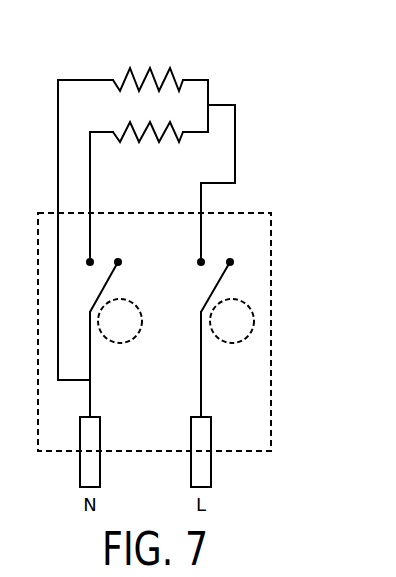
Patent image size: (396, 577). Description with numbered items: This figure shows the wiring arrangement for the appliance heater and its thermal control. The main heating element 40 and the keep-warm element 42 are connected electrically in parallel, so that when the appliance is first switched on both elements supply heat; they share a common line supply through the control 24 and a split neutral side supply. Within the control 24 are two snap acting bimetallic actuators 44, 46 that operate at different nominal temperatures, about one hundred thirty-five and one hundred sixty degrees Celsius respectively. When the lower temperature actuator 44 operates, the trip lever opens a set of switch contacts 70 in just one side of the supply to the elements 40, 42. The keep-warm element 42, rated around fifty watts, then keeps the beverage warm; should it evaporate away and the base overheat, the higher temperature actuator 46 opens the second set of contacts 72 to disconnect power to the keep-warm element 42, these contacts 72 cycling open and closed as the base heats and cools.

The control 24 is at (280, 346).
The main heating element 40 is at (158, 143).
The keep-warm element 42 is at (150, 68).
The snap acting bimetallic actuator 44 is at (118, 346).
The snap acting bimetallic actuator 46 is at (230, 346).
The switch contacts 70 is at (90, 243).
The second set of contacts 72 is at (201, 243).